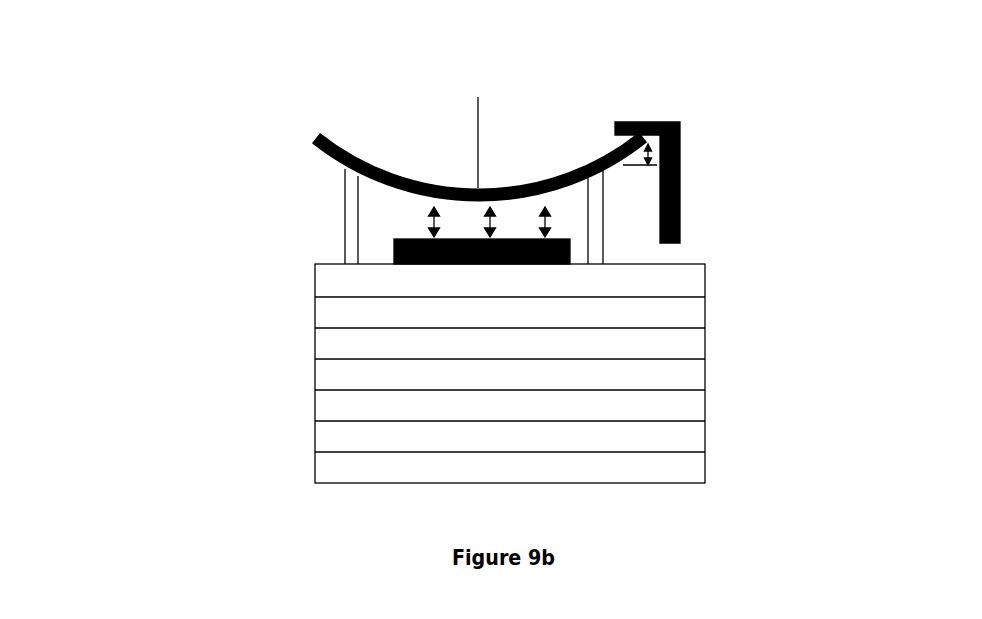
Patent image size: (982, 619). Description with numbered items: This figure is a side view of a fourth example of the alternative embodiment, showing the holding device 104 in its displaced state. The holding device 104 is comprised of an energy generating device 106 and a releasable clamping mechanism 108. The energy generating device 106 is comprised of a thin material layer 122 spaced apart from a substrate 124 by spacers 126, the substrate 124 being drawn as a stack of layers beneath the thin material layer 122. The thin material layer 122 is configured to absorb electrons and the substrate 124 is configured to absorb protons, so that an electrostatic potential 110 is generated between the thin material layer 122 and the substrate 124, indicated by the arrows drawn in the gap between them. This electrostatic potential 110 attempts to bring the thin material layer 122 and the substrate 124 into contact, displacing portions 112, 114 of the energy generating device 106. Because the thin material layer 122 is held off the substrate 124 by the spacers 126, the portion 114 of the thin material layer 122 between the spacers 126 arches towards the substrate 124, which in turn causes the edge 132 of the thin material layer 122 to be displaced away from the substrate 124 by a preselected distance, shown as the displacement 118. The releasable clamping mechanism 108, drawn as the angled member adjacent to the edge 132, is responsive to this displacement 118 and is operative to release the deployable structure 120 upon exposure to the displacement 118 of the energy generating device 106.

The holding device 104 is at (250, 73).
The energy generating device 106 is at (153, 228).
The releasable clamping mechanism 108 is at (680, 193).
The electrostatic potential 110 is at (427, 217).
The portion of the energy generating device 112 is at (608, 150).
The portion of the thin material layer 114 is at (479, 128).
The displacement 118 is at (680, 142).
The deployable structure 120 is at (683, 377).
The thin material layer 122 is at (331, 135).
The substrate 124 is at (394, 249).
The spacers 126 is at (345, 180).
The edge of the thin material layer 132 is at (638, 137).